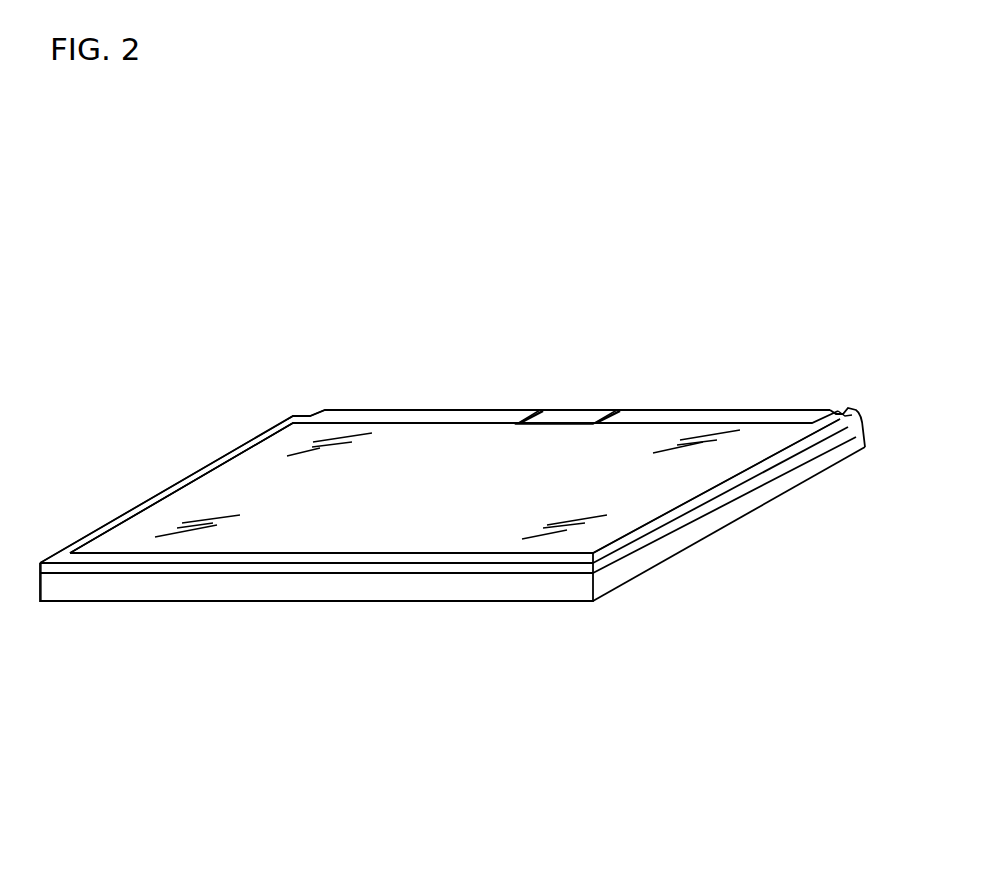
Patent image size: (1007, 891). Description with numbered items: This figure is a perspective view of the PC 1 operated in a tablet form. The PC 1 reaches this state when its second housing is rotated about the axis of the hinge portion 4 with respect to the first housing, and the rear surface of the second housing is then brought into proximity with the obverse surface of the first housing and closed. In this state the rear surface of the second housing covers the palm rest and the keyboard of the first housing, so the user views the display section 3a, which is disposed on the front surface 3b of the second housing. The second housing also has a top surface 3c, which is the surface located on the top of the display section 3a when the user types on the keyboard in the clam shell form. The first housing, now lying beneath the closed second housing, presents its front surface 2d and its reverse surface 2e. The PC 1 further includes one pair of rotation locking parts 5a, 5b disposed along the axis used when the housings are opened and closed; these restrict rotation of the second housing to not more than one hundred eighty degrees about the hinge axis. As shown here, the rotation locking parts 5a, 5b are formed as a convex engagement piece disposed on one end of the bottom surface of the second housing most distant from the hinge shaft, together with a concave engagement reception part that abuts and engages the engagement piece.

The PC 1 is at (113, 308).
The front surface 2d is at (316, 621).
The reverse surface 2e is at (316, 672).
The display section 3a is at (455, 435).
The front surface 3b is at (166, 489).
The top surface 3c is at (316, 615).
The hinge portion 4 is at (573, 361).
The rotation locking part 5a is at (277, 364).
The rotation locking part 5b is at (845, 384).